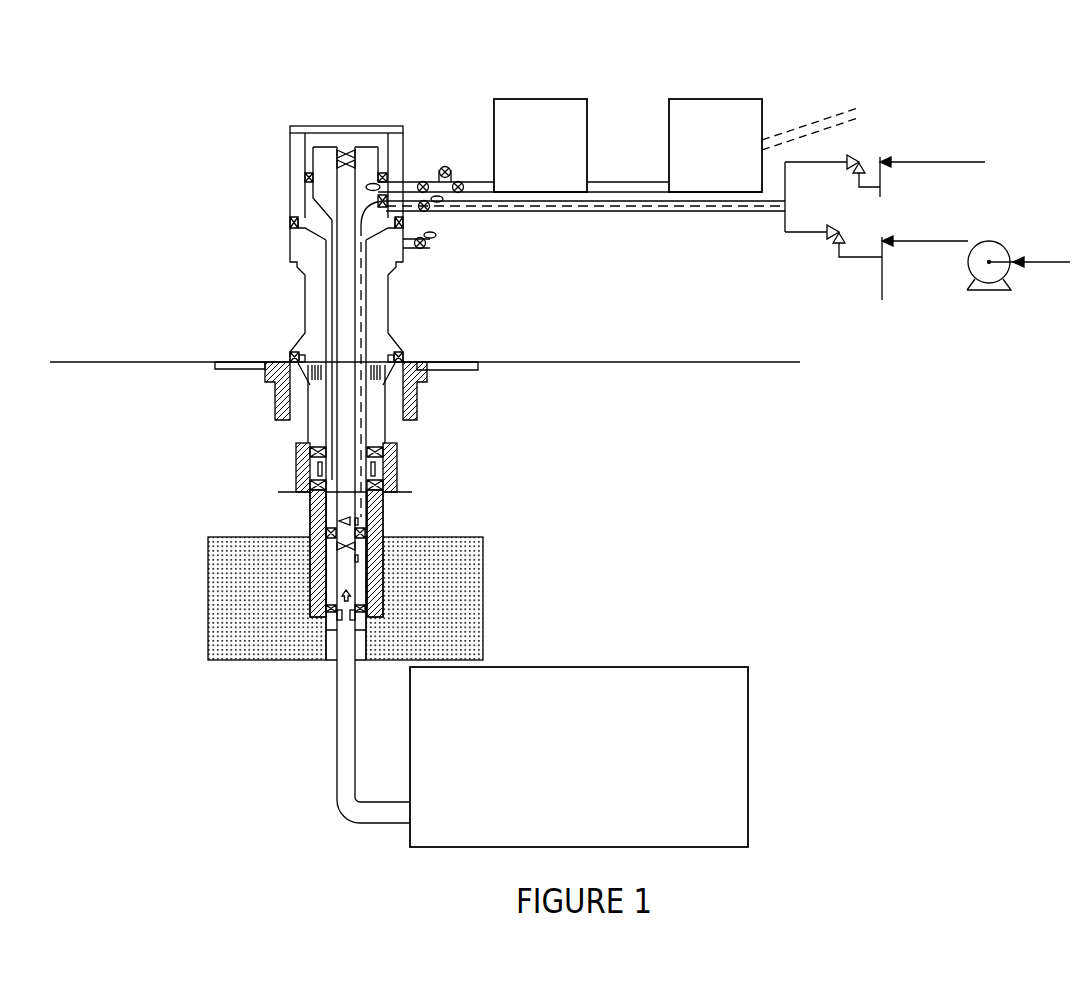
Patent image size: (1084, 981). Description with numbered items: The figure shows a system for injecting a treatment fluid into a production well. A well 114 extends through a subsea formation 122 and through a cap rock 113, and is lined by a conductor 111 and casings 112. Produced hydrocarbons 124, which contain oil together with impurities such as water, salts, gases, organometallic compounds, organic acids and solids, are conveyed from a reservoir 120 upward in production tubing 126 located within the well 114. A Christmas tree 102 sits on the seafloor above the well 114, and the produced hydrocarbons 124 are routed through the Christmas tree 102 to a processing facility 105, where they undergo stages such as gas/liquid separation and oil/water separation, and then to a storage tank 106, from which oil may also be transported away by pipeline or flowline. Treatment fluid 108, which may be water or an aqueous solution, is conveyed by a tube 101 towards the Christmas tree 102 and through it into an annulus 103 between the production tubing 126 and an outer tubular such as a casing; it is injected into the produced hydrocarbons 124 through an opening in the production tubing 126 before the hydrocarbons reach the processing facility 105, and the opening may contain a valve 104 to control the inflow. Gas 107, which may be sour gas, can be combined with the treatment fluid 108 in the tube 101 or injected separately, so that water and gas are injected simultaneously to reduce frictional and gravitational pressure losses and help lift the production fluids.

The tube 101 is at (621, 212).
The Christmas tree 102 is at (290, 175).
The annulus 103 is at (362, 320).
The valve 104 is at (385, 517).
The processing facility 105 is at (541, 99).
The storage tank 106 is at (710, 99).
The gas 107 is at (885, 193).
The treatment fluid 108 is at (927, 262).
The conductor 111 is at (268, 382).
The casings 112 is at (288, 492).
The cap rock 113 is at (240, 638).
The well 114 is at (312, 503).
The reservoir 120 is at (748, 713).
The formation 122 is at (690, 630).
The produced hydrocarbons 124 is at (347, 604).
The production tubing 126 is at (333, 572).